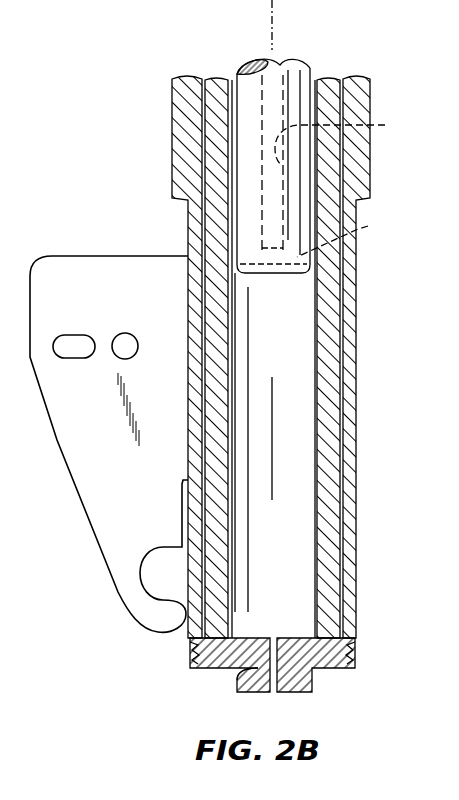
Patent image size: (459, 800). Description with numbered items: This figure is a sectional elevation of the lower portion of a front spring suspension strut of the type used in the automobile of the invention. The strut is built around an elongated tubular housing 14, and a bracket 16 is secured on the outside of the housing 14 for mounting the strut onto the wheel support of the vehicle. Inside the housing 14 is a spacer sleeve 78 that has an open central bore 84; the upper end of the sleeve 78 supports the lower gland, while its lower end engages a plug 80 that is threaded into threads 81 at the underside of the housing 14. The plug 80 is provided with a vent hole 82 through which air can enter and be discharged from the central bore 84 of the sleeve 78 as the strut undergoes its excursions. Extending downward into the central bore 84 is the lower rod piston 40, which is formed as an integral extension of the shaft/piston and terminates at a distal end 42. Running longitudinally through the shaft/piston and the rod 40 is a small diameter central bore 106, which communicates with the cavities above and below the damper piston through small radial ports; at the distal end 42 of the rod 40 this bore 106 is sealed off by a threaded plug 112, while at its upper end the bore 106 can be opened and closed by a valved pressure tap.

The tubular housing 14 is at (348, 500).
The bracket 16 is at (78, 478).
The lower rod piston 40 is at (305, 68).
The distal end 42 is at (290, 277).
The spacer sleeve 78 is at (327, 430).
The plug 80 is at (293, 693).
The threads 81 is at (347, 650).
The vent hole 82 is at (238, 677).
The central bore 84 is at (303, 423).
The central bore 106 is at (345, 138).
The threaded plug 112 is at (346, 235).